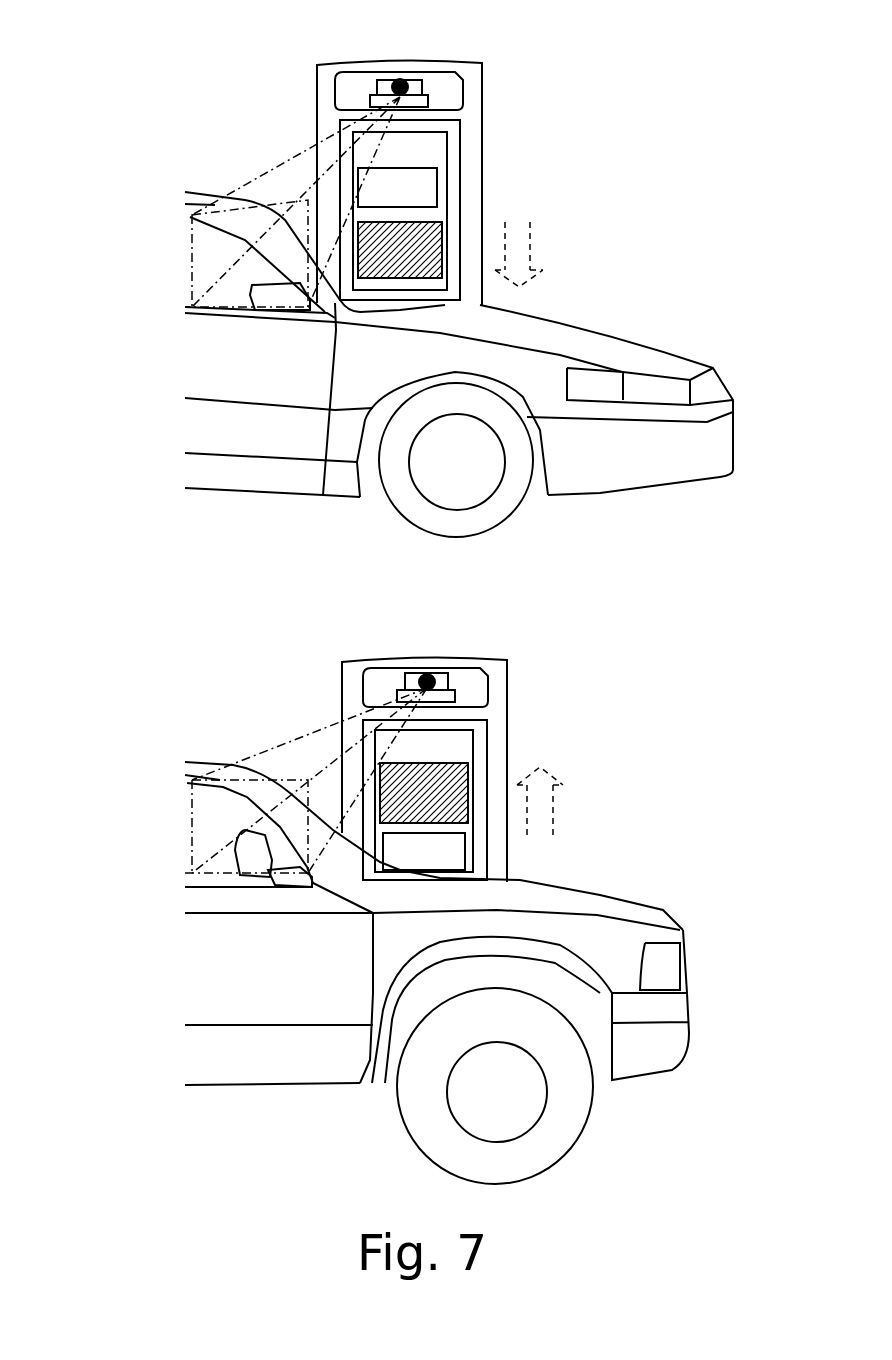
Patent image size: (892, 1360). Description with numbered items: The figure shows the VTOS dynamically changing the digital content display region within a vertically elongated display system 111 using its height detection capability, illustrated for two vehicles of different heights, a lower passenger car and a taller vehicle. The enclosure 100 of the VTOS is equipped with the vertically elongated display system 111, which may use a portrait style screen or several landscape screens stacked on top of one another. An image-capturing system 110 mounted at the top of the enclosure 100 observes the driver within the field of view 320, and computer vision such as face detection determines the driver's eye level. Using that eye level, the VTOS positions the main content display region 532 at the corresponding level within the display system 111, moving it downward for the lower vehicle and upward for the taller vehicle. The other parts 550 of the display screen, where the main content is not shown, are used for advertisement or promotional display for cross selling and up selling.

The enclosure 100 is at (357, 60).
The image-capturing system 110 is at (420, 95).
The display system 111 is at (458, 130).
The other parts of the display screen 550 is at (427, 185).
The main content display region 532 is at (432, 220).
The field of view 320 is at (192, 237).